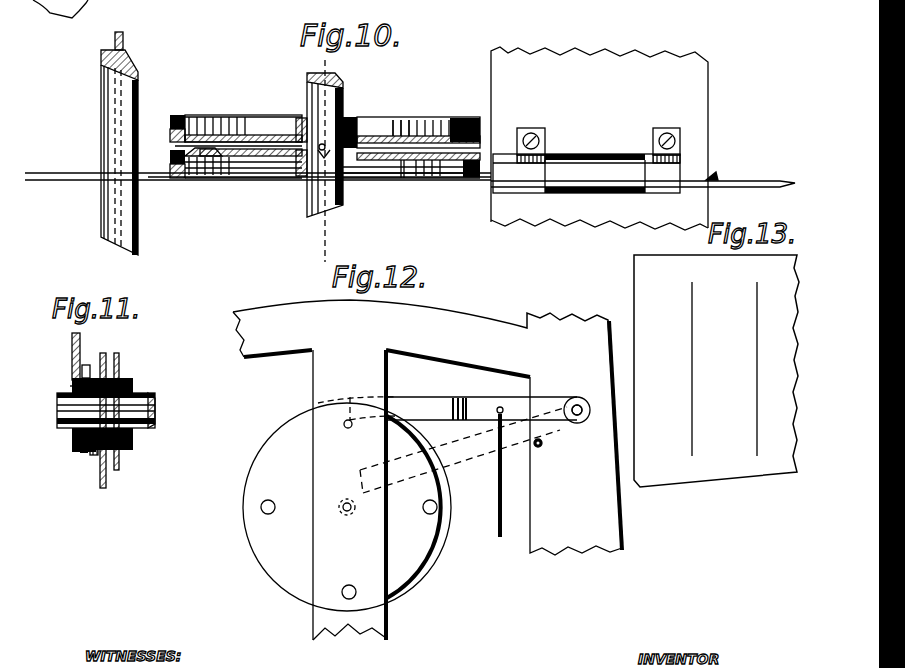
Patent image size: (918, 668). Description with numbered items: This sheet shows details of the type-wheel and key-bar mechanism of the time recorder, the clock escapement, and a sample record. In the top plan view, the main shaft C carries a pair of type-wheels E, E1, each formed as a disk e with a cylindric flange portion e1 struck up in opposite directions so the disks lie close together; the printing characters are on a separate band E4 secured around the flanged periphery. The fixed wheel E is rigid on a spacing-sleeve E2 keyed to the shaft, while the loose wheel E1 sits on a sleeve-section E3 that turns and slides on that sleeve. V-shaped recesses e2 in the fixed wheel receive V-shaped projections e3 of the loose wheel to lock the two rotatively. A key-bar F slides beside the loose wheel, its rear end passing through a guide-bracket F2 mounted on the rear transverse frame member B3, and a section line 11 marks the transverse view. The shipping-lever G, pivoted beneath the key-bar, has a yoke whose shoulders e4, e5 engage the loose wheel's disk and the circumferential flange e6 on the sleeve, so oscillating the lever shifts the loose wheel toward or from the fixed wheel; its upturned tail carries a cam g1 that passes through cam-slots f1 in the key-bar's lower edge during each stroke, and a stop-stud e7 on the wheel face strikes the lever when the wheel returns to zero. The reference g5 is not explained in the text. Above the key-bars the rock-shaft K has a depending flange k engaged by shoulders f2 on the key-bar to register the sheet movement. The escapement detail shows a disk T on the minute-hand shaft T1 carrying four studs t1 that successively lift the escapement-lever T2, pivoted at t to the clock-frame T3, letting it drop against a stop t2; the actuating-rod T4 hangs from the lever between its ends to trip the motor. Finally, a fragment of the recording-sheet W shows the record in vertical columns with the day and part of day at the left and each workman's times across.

In FIG. 10, the rock-shaft K is at (128, 66).
In FIG. 10, the radially-extending flange k is at (113, 40).
In FIG. 10, the key-bar F is at (60, 181).
In FIG. 10, the cam-slot f1 is at (748, 183).
In FIG. 10, the shoulder f2 is at (148, 180).
In FIG. 10, the type-wheel E is at (236, 122).
In FIG. 10, the type-wheel E1 is at (255, 166).
In FIG. 10, the spacing-sleeve E2 is at (356, 125).
In FIG. 11, the spacing-sleeve E2 is at (133, 385).
In FIG. 10, the sleeve-section E3 is at (296, 176).
In FIG. 11, the sleeve-section E3 is at (93, 455).
In FIG. 10, the band E4 is at (177, 115).
In FIG. 10, the disk e is at (412, 135).
In FIG. 11, the disk e is at (100, 362).
In FIG. 10, the cylindric flange portion e1 is at (195, 117).
In FIG. 10, the V-shaped recesses e2 is at (178, 146).
In FIG. 10, the V-shaped projections e3 is at (208, 156).
In FIG. 10, the shoulder e4 is at (300, 124).
In FIG. 10, the shoulder e5 is at (323, 197).
In FIG. 11, the shoulder e5 is at (72, 376).
In FIG. 11, the circumferential flange e6 is at (72, 384).
In FIG. 10, the stop-stud e7 is at (440, 177).
In FIG. 10, the main shaft C is at (347, 197).
In FIG. 11, the main shaft C is at (57, 412).
In FIG. 10, the shipping-lever G is at (420, 180).
In FIG. 11, the shipping-lever G is at (80, 455).
In FIG. 10, the cam g1 is at (716, 178).
In FIG. 11, the nut g5 is at (74, 452).
In FIG. 10, the section line 11 11 is at (325, 163).
In FIG. 10, the transverse frame member B3 is at (599, 138).
In FIG. 10, the guide-bracket F2 is at (597, 155).
In FIG. 12, the disk T is at (245, 490).
In FIG. 12, the minute-hand shaft T1 is at (352, 510).
In FIG. 12, the escapement-lever T2 is at (440, 397).
In FIG. 12, the clock-frame T3 is at (427, 427).
In FIG. 12, the actuating-rod T4 is at (501, 538).
In FIG. 12, the pivot t is at (578, 422).
In FIG. 12, the studs t1 is at (275, 507).
In FIG. 12, the stop t2 is at (541, 447).
In FIG. 13, the recording-sheet W is at (634, 281).